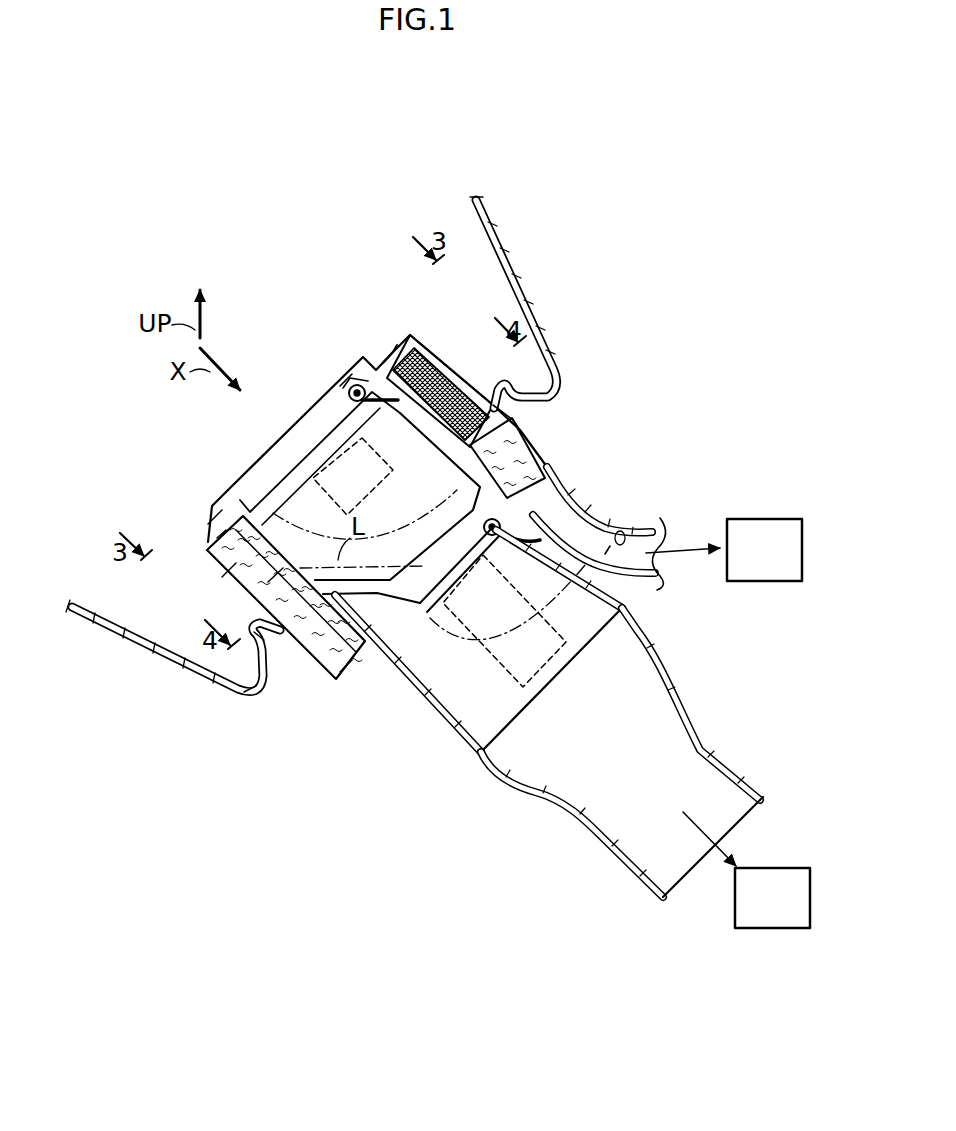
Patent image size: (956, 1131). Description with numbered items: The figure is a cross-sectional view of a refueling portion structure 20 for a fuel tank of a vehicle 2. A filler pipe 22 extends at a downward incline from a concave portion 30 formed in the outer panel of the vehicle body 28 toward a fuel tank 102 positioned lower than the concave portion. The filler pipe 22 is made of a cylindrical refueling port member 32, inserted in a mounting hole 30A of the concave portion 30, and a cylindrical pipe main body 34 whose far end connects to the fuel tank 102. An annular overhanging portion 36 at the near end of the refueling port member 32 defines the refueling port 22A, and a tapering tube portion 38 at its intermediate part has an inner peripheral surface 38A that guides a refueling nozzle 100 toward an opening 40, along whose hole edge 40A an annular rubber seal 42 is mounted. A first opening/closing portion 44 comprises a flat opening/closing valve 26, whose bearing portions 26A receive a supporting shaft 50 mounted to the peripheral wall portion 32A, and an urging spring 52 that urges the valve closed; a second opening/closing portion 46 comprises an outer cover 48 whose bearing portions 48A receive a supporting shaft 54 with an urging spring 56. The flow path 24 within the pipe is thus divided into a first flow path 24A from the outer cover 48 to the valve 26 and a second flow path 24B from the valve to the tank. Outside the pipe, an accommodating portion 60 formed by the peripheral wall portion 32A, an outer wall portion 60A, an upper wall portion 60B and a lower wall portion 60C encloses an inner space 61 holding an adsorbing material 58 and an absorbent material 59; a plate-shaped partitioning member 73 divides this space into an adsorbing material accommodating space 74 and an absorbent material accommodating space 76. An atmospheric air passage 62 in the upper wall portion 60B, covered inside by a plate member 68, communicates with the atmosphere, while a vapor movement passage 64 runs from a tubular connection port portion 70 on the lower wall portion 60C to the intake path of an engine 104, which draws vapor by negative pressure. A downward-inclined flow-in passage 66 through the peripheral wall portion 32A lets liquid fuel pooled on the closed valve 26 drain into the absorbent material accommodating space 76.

The vehicle 2 is at (448, 336).
The refueling portion structure 20 is at (220, 266).
The filler pipe 22 is at (552, 868).
The refueling port 22A is at (247, 467).
The flow path 24 is at (425, 833).
The first flow path 24A is at (316, 828).
The second flow path 24B is at (378, 828).
The opening/closing valve 26 is at (463, 637).
The bearing portions 26A is at (585, 590).
The vehicle body 28 is at (99, 673).
The concave portion 30 is at (80, 612).
The mounting hole 30A is at (248, 690).
The refueling port member 32 is at (440, 750).
The peripheral wall portion 32A is at (292, 560).
The pipe main body 34 is at (540, 803).
The overhanging portion 36 is at (340, 377).
The tube portion 38 is at (467, 500).
The inner peripheral surface 38A is at (368, 575).
The opening 40 is at (462, 565).
The hole edge 40A is at (418, 600).
The rubber seal 42 is at (407, 603).
The first opening/closing portion 44 is at (583, 670).
The second opening/closing portion 46 is at (320, 318).
The outer cover 48 is at (306, 450).
The bearing portions 48A is at (357, 383).
The supporting shaft 50 is at (548, 572).
The urging spring 52 is at (626, 590).
The supporting shaft 54 is at (348, 392).
The urging spring 56 is at (380, 405).
The adsorbing material 58 is at (458, 397).
The absorbent material 59 is at (217, 538).
The accommodating portion 60 is at (245, 611).
The outer wall portion 60A is at (222, 577).
The upper wall portion 60B is at (208, 524).
The lower wall portion 60C is at (340, 672).
The inner space 61 is at (285, 711).
The atmospheric air passage 62 is at (385, 348).
The vapor movement passage 64 is at (623, 530).
The flow-in passage 66 is at (270, 582).
The plate member 68 is at (416, 344).
The connection port portion 70 is at (573, 487).
The partitioning member 73 is at (517, 443).
The adsorbing material accommodating space 74 is at (432, 357).
The absorbent material accommodating space 76 is at (322, 724).
The refueling nozzle 100 is at (396, 480).
The fuel tank 102 is at (777, 868).
The engine 104 is at (757, 519).